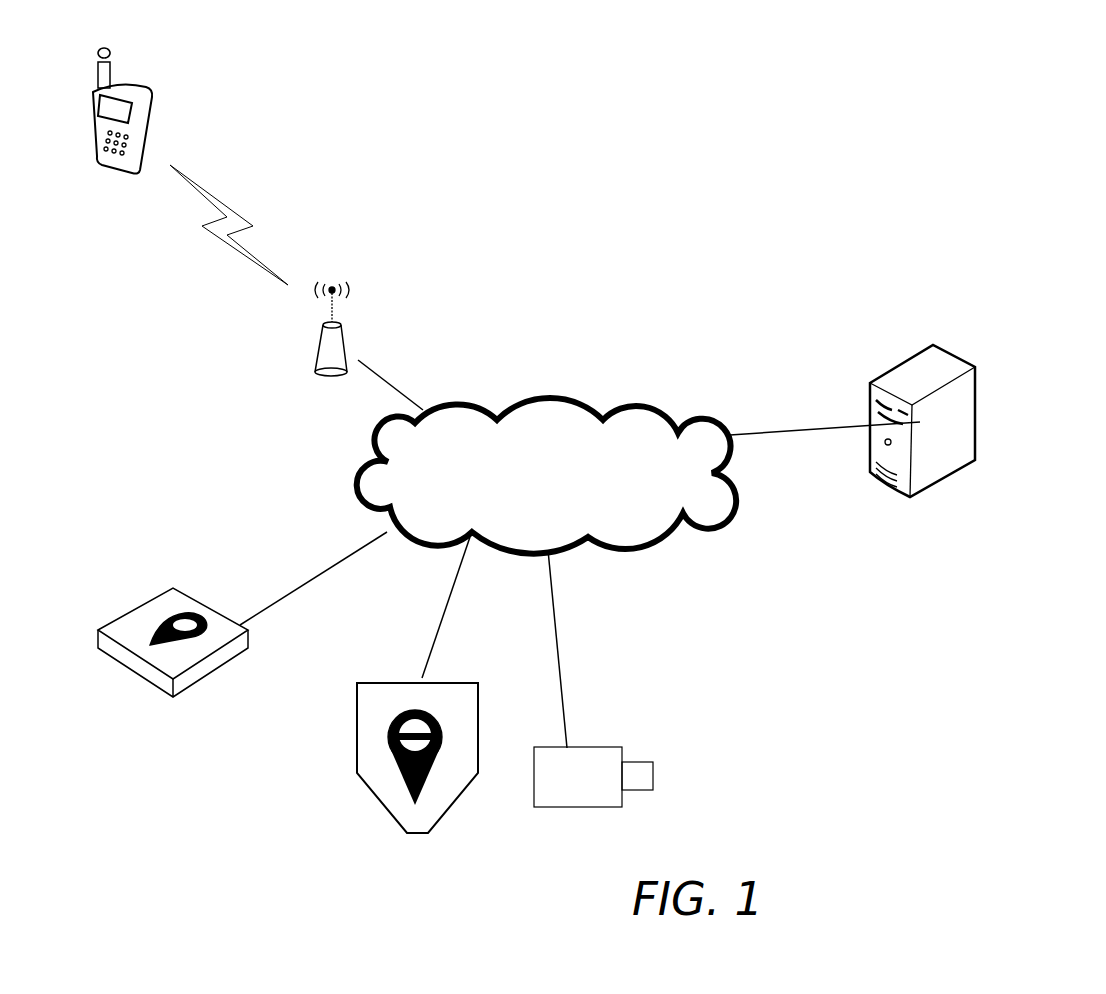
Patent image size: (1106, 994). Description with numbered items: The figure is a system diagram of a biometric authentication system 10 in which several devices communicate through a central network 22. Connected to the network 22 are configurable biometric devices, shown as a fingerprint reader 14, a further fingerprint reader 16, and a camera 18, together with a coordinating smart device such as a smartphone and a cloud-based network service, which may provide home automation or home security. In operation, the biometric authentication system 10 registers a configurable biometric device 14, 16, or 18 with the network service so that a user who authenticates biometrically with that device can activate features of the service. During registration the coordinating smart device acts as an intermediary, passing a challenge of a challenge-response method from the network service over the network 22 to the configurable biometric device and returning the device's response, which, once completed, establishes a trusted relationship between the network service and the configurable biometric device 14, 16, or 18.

The biometric authentication system 10 is at (723, 220).
The fingerprint reader 14 is at (152, 717).
The fingerprint reader 16 is at (328, 777).
The camera 18 is at (552, 813).
The network 22 is at (587, 540).